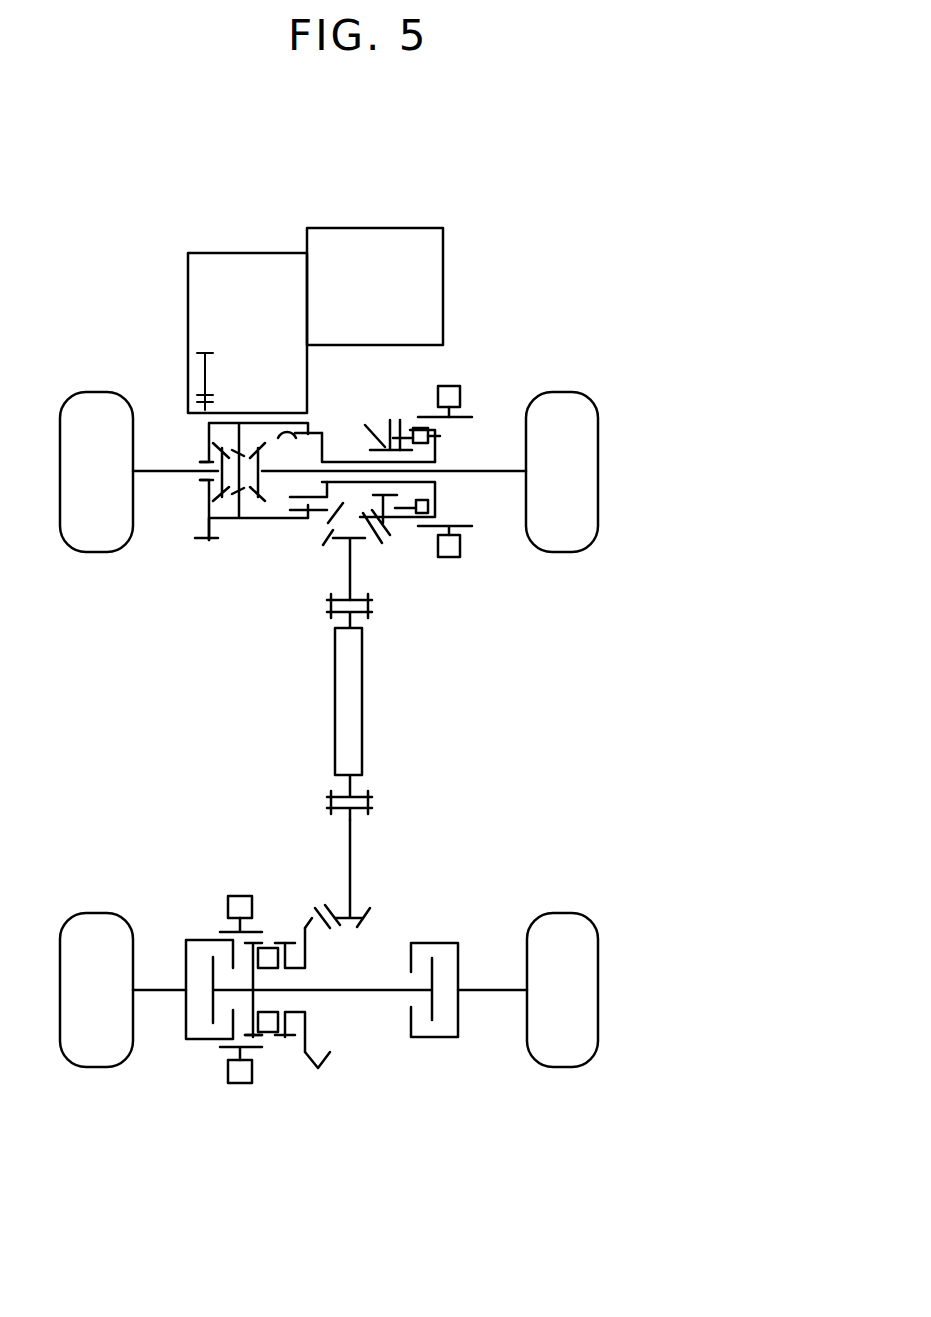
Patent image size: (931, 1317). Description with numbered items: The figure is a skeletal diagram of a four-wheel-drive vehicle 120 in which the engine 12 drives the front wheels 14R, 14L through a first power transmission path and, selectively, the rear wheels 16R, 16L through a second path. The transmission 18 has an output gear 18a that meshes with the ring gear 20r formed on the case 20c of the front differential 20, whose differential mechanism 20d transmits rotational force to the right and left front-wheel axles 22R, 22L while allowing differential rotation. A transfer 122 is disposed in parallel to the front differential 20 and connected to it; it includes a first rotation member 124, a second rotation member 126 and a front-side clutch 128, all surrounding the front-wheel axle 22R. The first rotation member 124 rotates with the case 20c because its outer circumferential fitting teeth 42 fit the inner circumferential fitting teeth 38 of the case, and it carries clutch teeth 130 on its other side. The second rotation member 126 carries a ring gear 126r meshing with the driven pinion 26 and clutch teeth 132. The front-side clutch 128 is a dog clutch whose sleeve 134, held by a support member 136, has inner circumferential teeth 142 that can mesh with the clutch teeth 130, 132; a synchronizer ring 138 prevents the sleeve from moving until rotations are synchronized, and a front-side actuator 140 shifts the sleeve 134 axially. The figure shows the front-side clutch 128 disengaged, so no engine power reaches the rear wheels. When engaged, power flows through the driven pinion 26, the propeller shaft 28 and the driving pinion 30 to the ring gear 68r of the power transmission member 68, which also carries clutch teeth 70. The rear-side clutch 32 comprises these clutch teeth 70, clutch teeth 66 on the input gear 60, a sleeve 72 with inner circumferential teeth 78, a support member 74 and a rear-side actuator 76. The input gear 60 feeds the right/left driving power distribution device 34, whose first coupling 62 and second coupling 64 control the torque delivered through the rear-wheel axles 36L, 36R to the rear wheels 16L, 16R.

The four-wheel-drive vehicle 120 is at (491, 178).
The engine 12 is at (395, 246).
The transmission 18 is at (247, 265).
The output gear 18a is at (197, 392).
The left front wheel 14L is at (93, 408).
The right front wheel 14R is at (563, 408).
The left rear wheel 16L is at (95, 1068).
The right rear wheel 16R is at (562, 1056).
The left front-wheel axle 22L is at (160, 478).
The right front-wheel axle 22R is at (500, 478).
The front differential 20 is at (260, 528).
The differential mechanism 20d is at (228, 510).
The case 20c is at (258, 520).
The ring gear 20r is at (200, 543).
The outer circumferential fitting teeth 42 is at (250, 463).
The inner circumferential fitting teeth 38 is at (327, 440).
The transfer 122 is at (434, 508).
The first rotation member 124 is at (348, 460).
The second rotation member 126 is at (388, 420).
The clutch teeth 132 is at (406, 432).
The clutch teeth 130 is at (450, 449).
The synchronizer ring 138 is at (418, 427).
The support member 136 is at (453, 388).
The sleeve 134 is at (468, 417).
The inner circumferential teeth 142 is at (443, 423).
The front-side clutch 128 is at (412, 560).
The ring gear 126r is at (378, 512).
The front-side actuator 140 is at (417, 512).
The driven pinion 26 is at (348, 568).
The propeller shaft 28 is at (364, 714).
The driving pinion 30 is at (350, 878).
The ring gear 68r is at (322, 905).
The rear-side clutch 32 is at (282, 990).
The clutch teeth 66 is at (260, 933).
The sleeve 72 is at (228, 930).
The clutch teeth 70 is at (294, 945).
The power transmission member 68 is at (310, 942).
The input gear 60 is at (255, 1002).
The rear-side actuator 76 is at (268, 1028).
The inner circumferential teeth 78 is at (255, 1042).
The support member 74 is at (242, 1083).
The right/left driving power distribution device 34 is at (330, 1073).
The left rear-wheel axle 36L is at (158, 998).
The right rear-wheel axle 36R is at (492, 998).
The first coupling 62 is at (203, 1050).
The second coupling 64 is at (418, 1050).